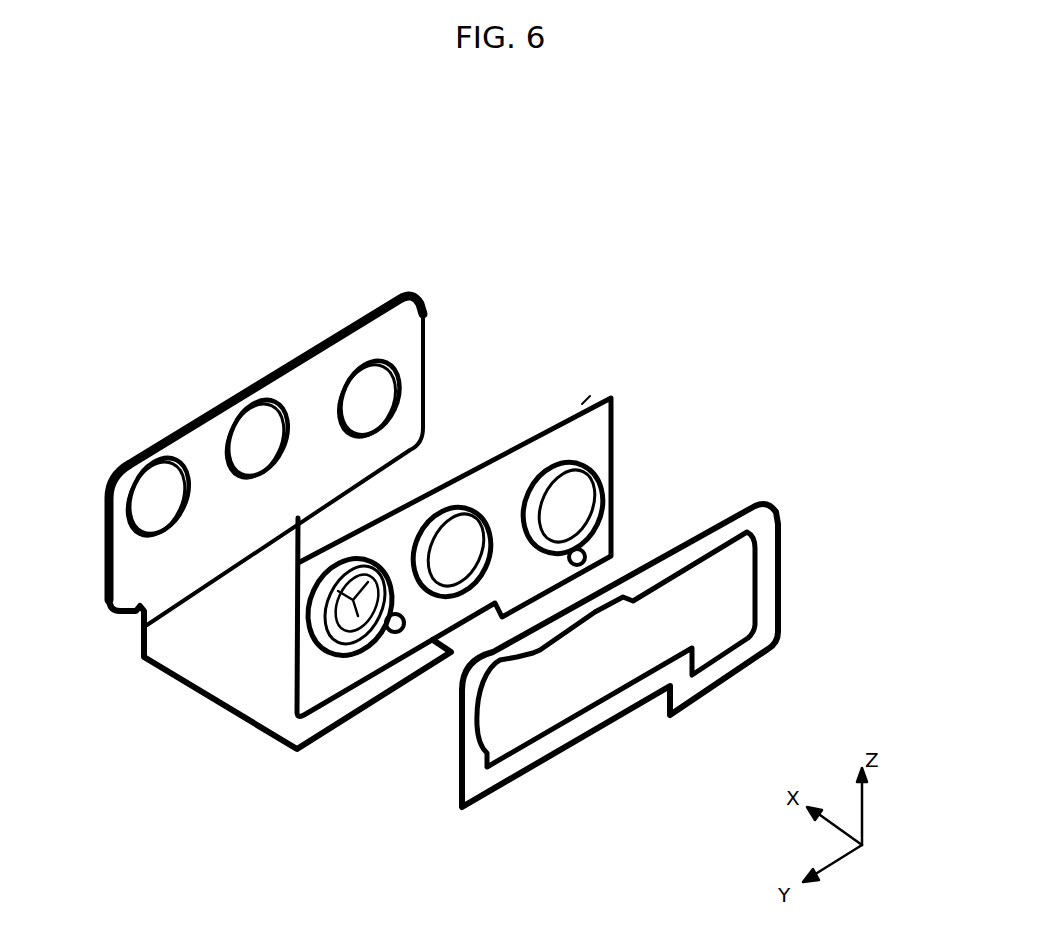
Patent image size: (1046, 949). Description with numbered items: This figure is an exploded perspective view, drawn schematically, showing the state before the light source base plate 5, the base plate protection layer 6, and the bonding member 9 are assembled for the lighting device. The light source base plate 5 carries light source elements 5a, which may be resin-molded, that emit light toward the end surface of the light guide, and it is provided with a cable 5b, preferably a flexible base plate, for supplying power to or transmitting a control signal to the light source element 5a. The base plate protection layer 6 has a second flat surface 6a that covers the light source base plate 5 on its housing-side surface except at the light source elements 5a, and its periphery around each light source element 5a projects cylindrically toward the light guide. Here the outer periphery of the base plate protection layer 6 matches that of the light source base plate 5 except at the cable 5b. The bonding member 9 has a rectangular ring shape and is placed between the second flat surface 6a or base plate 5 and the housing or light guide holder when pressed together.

The light source base plate 5 is at (402, 335).
The light source element 5a is at (157, 490).
The cable 5b is at (220, 670).
The base plate protection layer 6 is at (595, 440).
The second flat surface 6a is at (572, 437).
The bonding member 9 is at (767, 537).